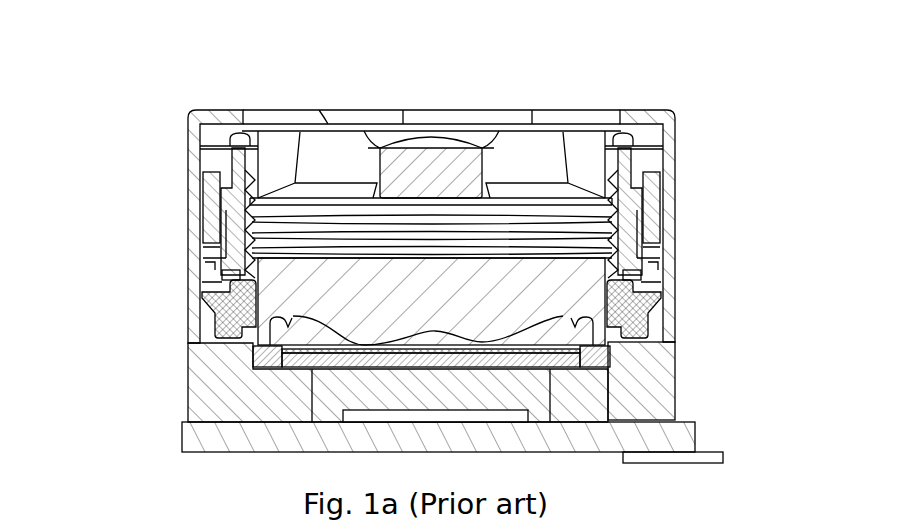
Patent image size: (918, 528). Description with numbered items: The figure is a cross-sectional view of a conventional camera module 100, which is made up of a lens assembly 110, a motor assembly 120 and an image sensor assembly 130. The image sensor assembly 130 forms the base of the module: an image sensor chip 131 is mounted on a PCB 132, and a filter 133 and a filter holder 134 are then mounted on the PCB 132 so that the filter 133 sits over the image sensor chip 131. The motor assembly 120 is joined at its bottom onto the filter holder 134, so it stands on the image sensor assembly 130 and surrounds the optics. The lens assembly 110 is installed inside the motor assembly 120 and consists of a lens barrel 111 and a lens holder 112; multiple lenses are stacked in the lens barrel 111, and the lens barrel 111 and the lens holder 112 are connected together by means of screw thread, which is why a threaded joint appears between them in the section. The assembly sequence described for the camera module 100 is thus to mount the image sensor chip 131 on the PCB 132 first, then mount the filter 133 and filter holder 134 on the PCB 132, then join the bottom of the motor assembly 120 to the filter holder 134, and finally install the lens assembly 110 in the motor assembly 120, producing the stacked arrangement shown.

The camera module 100 is at (146, 54).
The lens assembly 110 is at (452, 107).
The lens barrel 111 is at (592, 229).
The lens holder 112 is at (622, 198).
The motor assembly 120 is at (186, 202).
The image sensor assembly 130 is at (684, 403).
The image sensor chip 131 is at (352, 415).
The PCB 132 is at (187, 435).
The filter 133 is at (533, 362).
The filter holder 134 is at (650, 367).